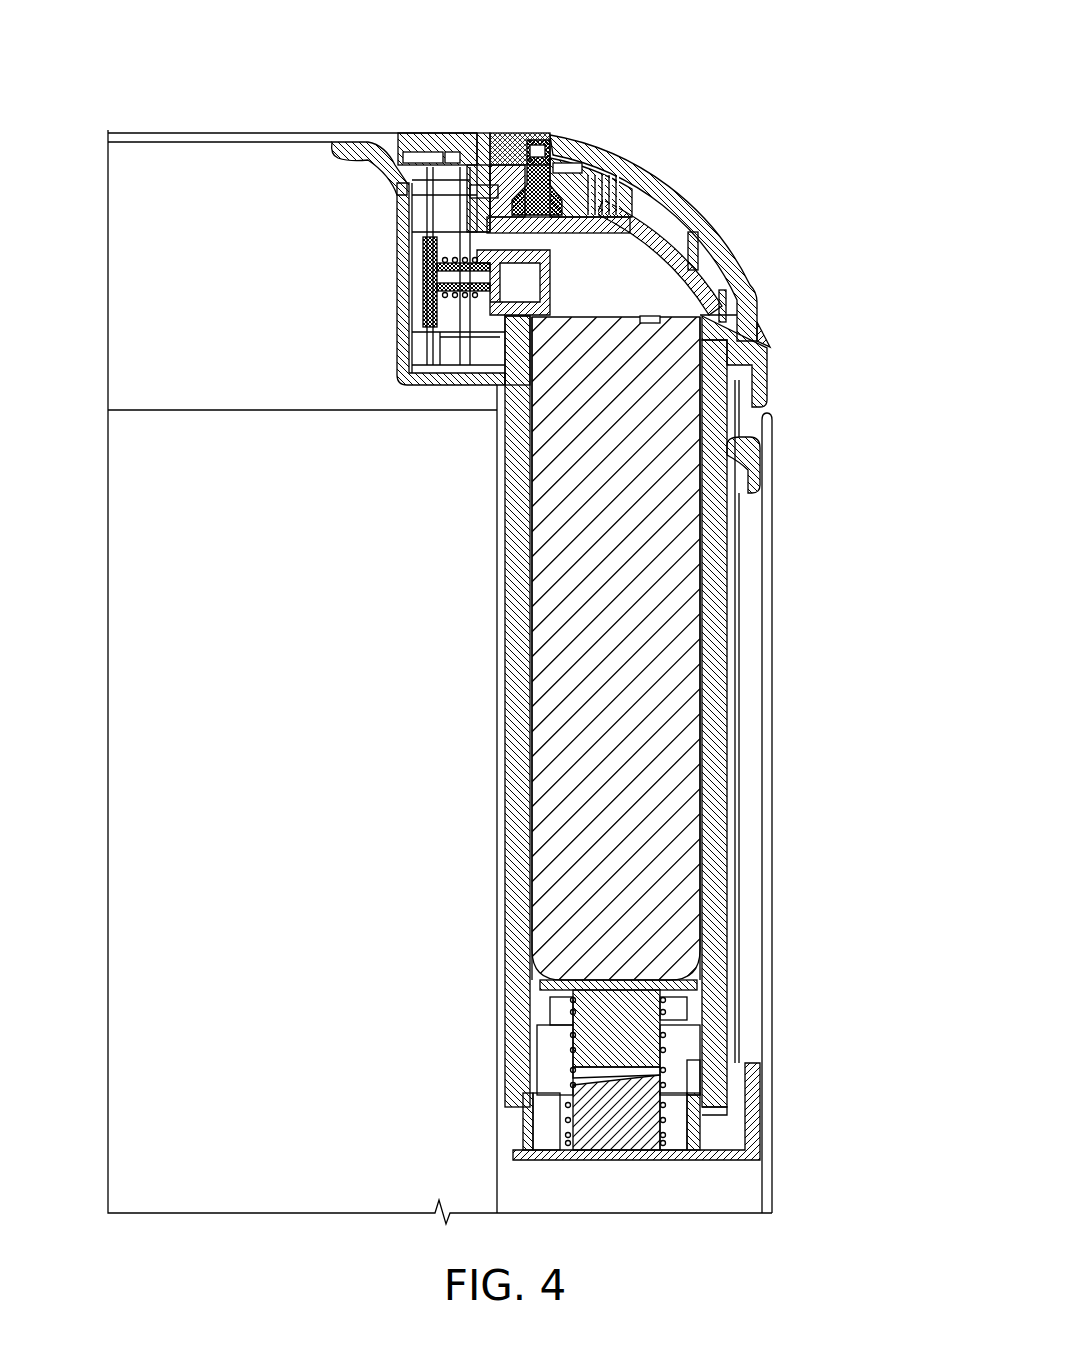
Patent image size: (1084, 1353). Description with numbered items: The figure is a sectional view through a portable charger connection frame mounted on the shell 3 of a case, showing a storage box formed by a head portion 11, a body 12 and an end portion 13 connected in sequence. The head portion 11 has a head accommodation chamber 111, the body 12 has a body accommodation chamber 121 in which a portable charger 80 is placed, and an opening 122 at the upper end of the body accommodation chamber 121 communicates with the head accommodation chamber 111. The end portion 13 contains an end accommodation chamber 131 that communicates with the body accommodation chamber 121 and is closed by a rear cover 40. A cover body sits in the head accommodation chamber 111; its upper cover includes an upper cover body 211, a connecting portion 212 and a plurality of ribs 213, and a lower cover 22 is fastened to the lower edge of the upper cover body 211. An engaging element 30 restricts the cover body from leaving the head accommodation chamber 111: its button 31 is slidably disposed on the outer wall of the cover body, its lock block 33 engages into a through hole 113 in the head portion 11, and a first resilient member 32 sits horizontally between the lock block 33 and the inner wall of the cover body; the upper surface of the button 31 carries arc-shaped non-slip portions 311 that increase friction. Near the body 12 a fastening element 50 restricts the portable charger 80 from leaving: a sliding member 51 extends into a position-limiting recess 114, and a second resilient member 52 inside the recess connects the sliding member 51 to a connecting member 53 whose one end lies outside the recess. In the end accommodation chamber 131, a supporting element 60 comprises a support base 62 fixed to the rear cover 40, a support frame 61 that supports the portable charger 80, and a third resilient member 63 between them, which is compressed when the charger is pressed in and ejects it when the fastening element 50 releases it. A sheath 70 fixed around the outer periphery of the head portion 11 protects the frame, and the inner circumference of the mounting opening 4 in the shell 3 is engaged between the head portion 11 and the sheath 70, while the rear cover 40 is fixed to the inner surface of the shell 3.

The shell 3 is at (765, 725).
The mounting opening 4 is at (757, 368).
The head portion 11 is at (440, 133).
The body 12 is at (520, 502).
The end portion 13 is at (724, 1030).
The lower cover 22 is at (718, 252).
The engaging element 30 is at (640, 55).
The button 31 is at (550, 150).
The first resilient member 32 is at (612, 175).
The lock block 33 is at (495, 133).
The rear cover 40 is at (755, 1152).
The fastening element 50 is at (352, 205).
The sliding member 51 is at (435, 290).
The second resilient member 52 is at (440, 262).
The connecting member 53 is at (428, 262).
The supporting element 60 is at (450, 935).
The support frame 61 is at (548, 978).
The support base 62 is at (575, 1133).
The third resilient member 63 is at (572, 1055).
The sheath 70 is at (352, 146).
The portable charger 80 is at (570, 645).
The head accommodation chamber 111 is at (637, 285).
The through hole 113 is at (470, 186).
The position-limiting recess 114 is at (470, 320).
The body accommodation chamber 121 is at (722, 583).
The opening 122 is at (500, 373).
The end accommodation chamber 131 is at (690, 1068).
The upper cover body 211 is at (690, 217).
The connecting portion 212 is at (735, 343).
The ribs 213 is at (742, 330).
The non-slip portions 311 is at (537, 145).